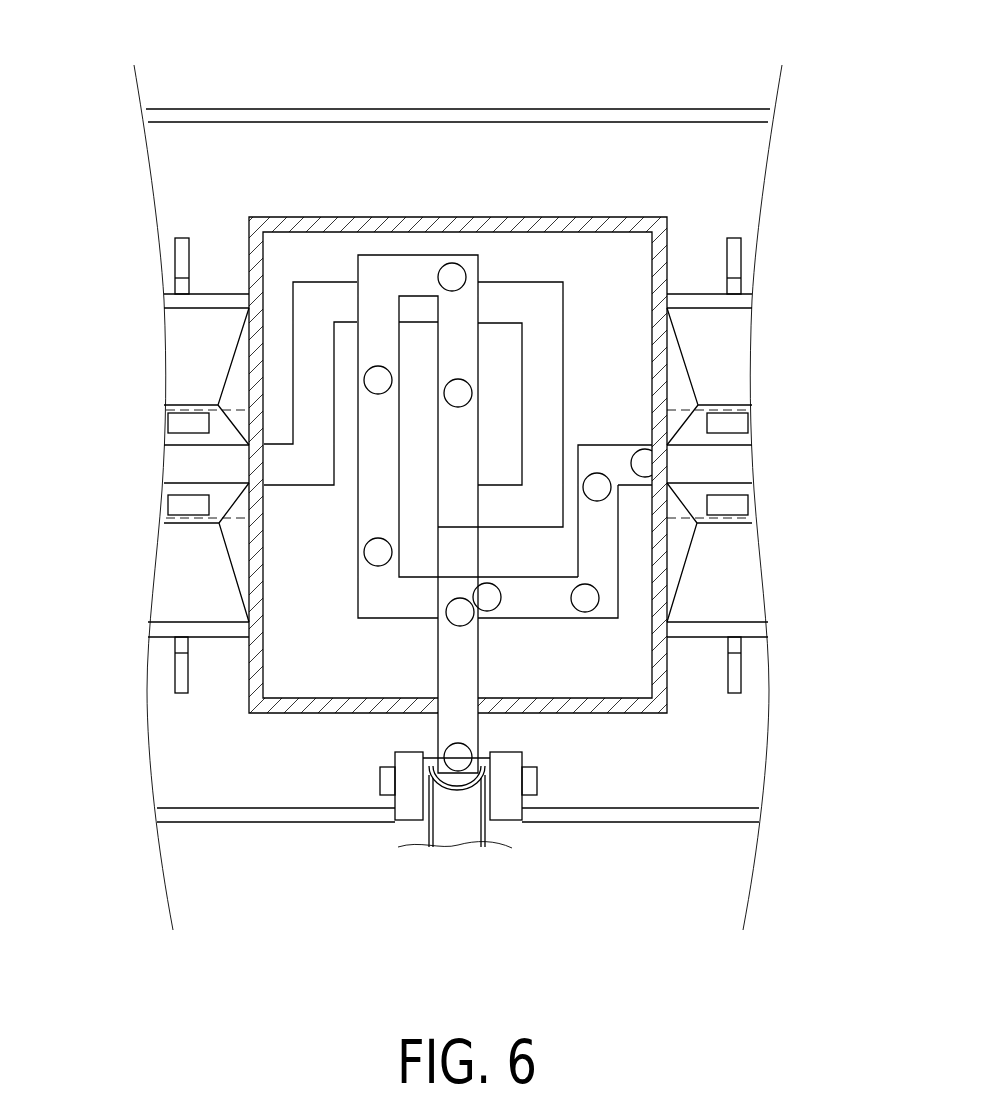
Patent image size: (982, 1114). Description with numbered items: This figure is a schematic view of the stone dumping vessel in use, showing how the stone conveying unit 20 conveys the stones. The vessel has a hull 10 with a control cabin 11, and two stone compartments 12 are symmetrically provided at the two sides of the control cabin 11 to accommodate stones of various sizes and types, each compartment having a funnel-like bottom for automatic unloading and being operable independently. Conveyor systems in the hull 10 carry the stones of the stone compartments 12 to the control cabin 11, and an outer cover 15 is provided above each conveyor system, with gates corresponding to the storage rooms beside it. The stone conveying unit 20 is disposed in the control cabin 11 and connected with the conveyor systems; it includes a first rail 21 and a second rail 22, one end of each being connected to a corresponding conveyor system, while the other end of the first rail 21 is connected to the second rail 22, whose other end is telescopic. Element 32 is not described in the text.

The hull 10 is at (436, 435).
The control cabin 11 is at (524, 228).
The stone compartment 12 is at (165, 633).
The outer cover 15 is at (180, 413).
The stone conveying unit 20 is at (561, 464).
The first rail 21 is at (333, 310).
The second rail 22 is at (610, 603).
The pivot support 32 is at (452, 823).